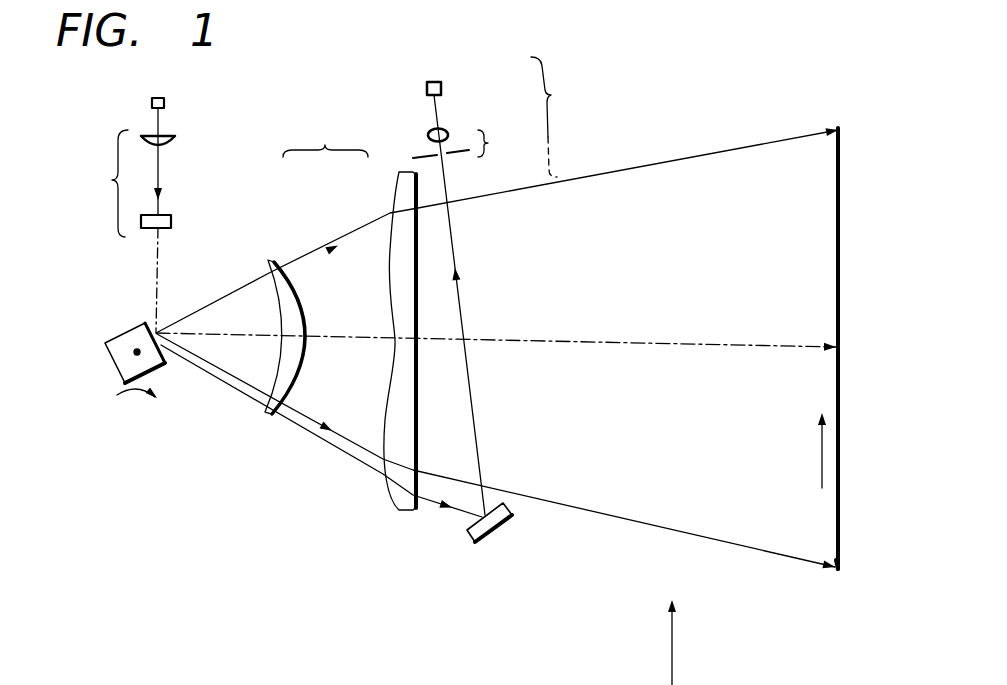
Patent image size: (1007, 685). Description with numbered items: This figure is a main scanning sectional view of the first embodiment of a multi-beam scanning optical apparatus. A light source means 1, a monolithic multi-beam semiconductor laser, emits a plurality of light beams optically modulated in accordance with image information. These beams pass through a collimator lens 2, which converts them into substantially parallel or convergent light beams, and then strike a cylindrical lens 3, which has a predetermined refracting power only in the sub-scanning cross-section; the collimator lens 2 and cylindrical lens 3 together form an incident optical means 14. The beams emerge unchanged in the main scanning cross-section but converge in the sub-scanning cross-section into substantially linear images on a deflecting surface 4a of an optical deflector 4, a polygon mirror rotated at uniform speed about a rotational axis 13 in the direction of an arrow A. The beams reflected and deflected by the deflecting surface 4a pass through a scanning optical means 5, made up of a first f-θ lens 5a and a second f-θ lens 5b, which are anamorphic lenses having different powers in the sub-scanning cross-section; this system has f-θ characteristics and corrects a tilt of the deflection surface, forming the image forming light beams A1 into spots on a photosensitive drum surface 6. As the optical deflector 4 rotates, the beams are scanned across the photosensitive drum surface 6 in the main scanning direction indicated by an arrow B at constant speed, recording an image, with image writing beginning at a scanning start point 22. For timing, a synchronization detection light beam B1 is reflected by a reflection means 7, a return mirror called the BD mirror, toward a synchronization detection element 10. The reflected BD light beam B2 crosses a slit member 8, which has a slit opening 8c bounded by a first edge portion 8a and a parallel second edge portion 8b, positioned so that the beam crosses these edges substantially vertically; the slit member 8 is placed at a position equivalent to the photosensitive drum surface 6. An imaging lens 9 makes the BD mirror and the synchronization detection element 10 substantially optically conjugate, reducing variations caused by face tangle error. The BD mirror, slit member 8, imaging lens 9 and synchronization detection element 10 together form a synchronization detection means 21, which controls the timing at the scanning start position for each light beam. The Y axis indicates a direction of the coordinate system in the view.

The light source means 1 is at (166, 103).
The collimator lens 2 is at (177, 138).
The cylindrical lens 3 is at (173, 222).
The optical deflector 4 is at (141, 351).
The deflecting surface 4a is at (165, 358).
The scanning optical means 5 is at (340, 313).
The first f-θ lens 5a is at (270, 262).
The second f-θ lens 5b is at (397, 204).
The photosensitive drum surface 6 is at (842, 178).
The reflection means 7 is at (490, 527).
The slit member 8 is at (489, 143).
The first edge portion 8a is at (414, 157).
The second edge portion 8b is at (458, 152).
The slit opening 8c is at (435, 153).
The imaging lens 9 is at (448, 131).
The synchronization detection element 10 is at (442, 86).
The rotational axis 13 is at (133, 355).
The incident optical means 14 is at (149, 163).
The synchronization detection means 21 is at (468, 128).
The scanning start point 22 is at (856, 576).
The arrow A is at (137, 409).
The image forming light beams A1 is at (593, 513).
The arrow B is at (818, 462).
The synchronization detection light beam B1 is at (462, 512).
The BD light beam B2 is at (475, 428).
The Y direction axis Y is at (669, 627).